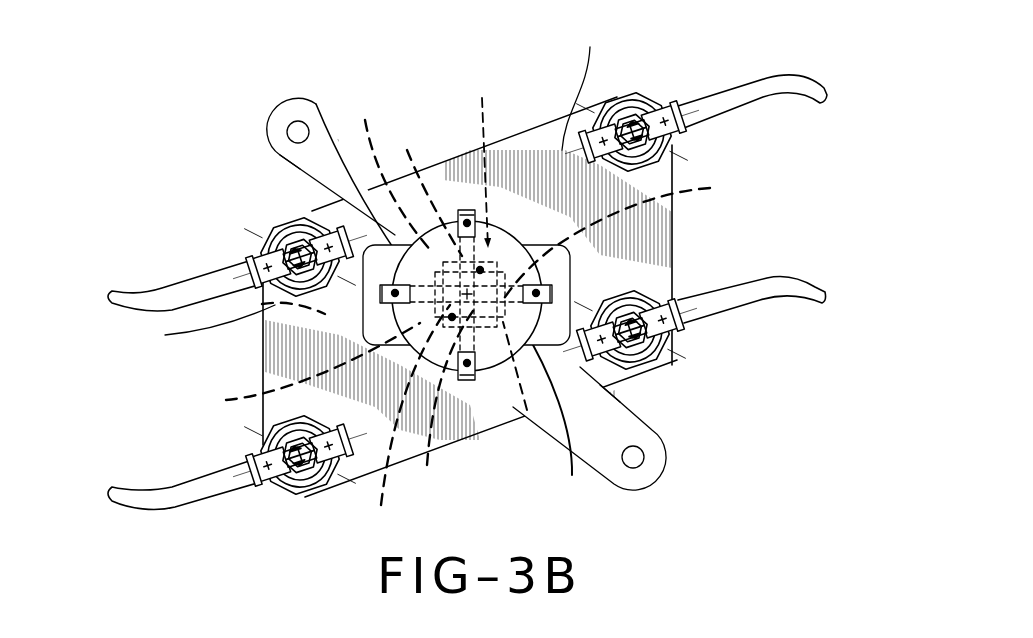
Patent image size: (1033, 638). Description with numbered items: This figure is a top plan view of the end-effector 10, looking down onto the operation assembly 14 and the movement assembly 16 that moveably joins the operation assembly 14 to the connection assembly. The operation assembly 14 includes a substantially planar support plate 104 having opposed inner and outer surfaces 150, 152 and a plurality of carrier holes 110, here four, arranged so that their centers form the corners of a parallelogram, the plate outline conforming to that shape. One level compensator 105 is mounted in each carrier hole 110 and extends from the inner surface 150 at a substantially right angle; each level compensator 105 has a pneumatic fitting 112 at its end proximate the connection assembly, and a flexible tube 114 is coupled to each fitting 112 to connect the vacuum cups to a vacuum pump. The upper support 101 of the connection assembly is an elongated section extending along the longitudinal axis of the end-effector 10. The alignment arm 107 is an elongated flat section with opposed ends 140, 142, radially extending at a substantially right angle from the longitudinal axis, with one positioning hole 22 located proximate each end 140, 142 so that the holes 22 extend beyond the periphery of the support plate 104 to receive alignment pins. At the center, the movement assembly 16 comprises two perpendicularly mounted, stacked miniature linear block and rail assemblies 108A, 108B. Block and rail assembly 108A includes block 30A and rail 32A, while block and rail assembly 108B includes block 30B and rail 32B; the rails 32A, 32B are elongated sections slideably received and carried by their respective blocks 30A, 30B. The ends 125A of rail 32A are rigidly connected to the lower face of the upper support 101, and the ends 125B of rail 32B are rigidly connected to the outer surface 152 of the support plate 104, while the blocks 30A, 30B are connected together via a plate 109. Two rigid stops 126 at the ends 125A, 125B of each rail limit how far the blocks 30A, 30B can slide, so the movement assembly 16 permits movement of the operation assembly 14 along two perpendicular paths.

The end-effector 10 is at (146, 110).
The operation assembly 14 is at (525, 121).
The movement assembly 16 is at (584, 289).
The positioning hole 22 is at (287, 133).
The block 30A is at (527, 410).
The block 30B is at (393, 171).
The rail 32A is at (431, 306).
The rail 32B is at (468, 295).
The upper support 101 is at (316, 104).
The support plate 104 is at (623, 382).
The level compensator 105 is at (675, 142).
The alignment arm 107 is at (285, 150).
The block and rail assembly 108A is at (480, 159).
The block and rail assembly 108B is at (399, 417).
The plate 109 is at (556, 408).
The carrier hole 110 is at (628, 107).
The pneumatic fitting 112 is at (667, 117).
The flexible tube 114 is at (763, 86).
The ends of rail 32A 125A is at (462, 213).
The ends of rail 32B 125B is at (548, 292).
The rigid stop 126 is at (494, 284).
The end of alignment arm 140 is at (280, 110).
The end of alignment arm 142 is at (657, 479).
The inner surface 150 is at (193, 326).
The outer surface 152 is at (587, 84).